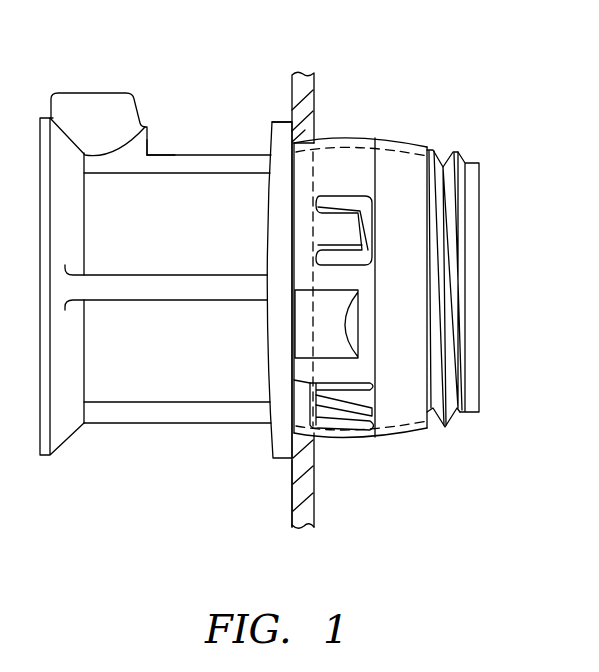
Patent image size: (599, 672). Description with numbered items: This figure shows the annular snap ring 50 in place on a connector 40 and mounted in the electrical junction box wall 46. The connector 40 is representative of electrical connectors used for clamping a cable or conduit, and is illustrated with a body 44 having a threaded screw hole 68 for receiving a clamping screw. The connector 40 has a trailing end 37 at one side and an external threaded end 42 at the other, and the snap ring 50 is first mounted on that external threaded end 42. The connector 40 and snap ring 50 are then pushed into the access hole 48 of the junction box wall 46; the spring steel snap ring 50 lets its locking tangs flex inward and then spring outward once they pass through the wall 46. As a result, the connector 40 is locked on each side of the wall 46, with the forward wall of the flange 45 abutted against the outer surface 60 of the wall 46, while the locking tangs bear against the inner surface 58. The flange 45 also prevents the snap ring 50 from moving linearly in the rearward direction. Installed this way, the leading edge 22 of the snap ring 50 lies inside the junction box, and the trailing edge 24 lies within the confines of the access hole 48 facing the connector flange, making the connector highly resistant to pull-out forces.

The leading edge 22 is at (430, 151).
The trailing edge 24 is at (300, 383).
The trailing end 37 is at (173, 153).
The connector 40 is at (278, 460).
The external threaded end 42 is at (455, 156).
The body 44 is at (182, 235).
The flange 45 is at (276, 120).
The electrical junction box wall 46 is at (355, 246).
The access hole 48 is at (313, 142).
The annular snap ring 50 is at (417, 275).
The inner surface 58 is at (315, 477).
The outer surface 60 is at (292, 493).
The threaded screw hole 68 is at (96, 93).